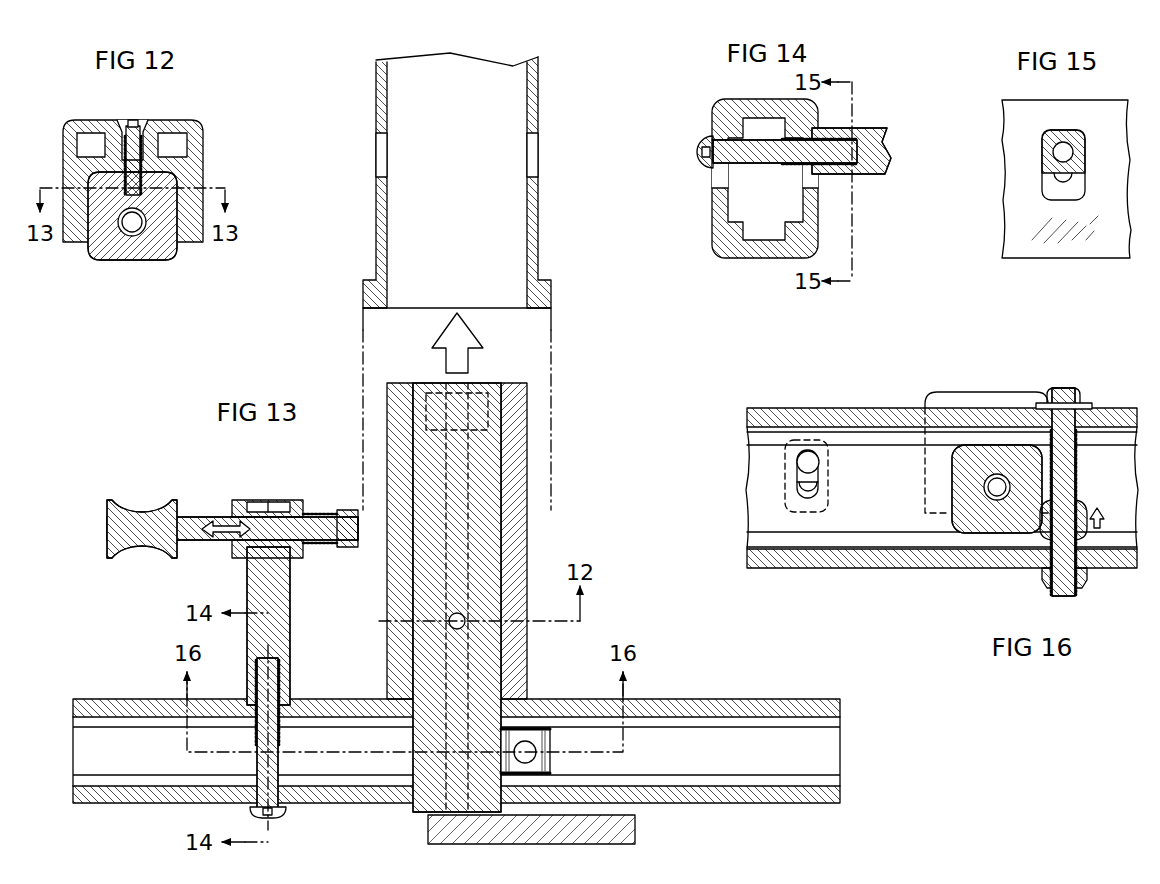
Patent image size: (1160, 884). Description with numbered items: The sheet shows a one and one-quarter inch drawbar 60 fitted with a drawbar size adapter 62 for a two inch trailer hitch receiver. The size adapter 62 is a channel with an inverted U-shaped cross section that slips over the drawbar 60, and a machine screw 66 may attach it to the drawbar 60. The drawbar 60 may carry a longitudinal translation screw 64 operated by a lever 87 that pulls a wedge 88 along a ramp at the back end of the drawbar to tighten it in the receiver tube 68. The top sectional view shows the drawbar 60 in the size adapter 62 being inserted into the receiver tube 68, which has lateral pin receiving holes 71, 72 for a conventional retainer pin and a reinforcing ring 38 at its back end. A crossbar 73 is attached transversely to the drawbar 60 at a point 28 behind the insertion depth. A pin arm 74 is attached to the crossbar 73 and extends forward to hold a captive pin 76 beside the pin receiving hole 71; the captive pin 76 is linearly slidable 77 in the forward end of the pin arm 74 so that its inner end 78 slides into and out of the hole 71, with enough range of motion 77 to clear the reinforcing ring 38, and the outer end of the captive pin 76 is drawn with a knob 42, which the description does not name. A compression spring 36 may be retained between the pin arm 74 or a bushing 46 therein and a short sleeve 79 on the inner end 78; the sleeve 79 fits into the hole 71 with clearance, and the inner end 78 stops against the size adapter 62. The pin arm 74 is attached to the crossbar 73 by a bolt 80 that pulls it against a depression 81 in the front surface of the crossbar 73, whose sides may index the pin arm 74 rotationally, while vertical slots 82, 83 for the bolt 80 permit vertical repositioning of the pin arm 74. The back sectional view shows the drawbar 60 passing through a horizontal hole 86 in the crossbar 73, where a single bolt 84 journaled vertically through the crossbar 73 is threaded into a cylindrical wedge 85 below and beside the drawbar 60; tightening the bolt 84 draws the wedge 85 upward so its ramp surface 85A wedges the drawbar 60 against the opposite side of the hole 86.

In FIG. 13, the point 28 is at (398, 690).
In FIG. 13, the compression spring 36 is at (304, 507).
In FIG. 13, the reinforcing ring 38 is at (546, 282).
In FIG. 13, the knob 42 is at (146, 508).
In FIG. 13, the bushing 46 is at (296, 553).
In FIG. 12, the drawbar 60 is at (143, 256).
In FIG. 13, the drawbar 60 is at (484, 483).
In FIG. 16, the drawbar 60 is at (965, 495).
In FIG. 12, the drawbar size adapter 62 is at (197, 172).
In FIG. 13, the drawbar size adapter 62 is at (513, 519).
In FIG. 16, the drawbar size adapter 62 is at (1006, 391).
In FIG. 12, the longitudinal translation screw 64 is at (127, 230).
In FIG. 13, the longitudinal translation screw 64 is at (470, 454).
In FIG. 12, the machine screw 66 is at (130, 119).
In FIG. 13, the machine screw 66 is at (462, 628).
In FIG. 13, the receiver tube 68 is at (441, 225).
In FIG. 13, the pin receiving hole 71 is at (383, 130).
In FIG. 13, the pin receiving hole 72 is at (529, 130).
In FIG. 13, the crossbar 73 is at (146, 764).
In FIG. 14, the crossbar 73 is at (712, 216).
In FIG. 15, the crossbar 73 is at (1003, 142).
In FIG. 16, the crossbar 73 is at (829, 420).
In FIG. 13, the pin arm 74 is at (284, 621).
In FIG. 14, the pin arm 74 is at (870, 132).
In FIG. 15, the pin arm 74 is at (1053, 134).
In FIG. 16, the pin arm 74 is at (824, 500).
In FIG. 13, the captive pin 76 is at (190, 514).
In FIG. 13, the linear sliding motion 77 is at (213, 536).
In FIG. 13, the inner end of captive pin 78 is at (346, 518).
In FIG. 13, the short sleeve 79 is at (346, 547).
In FIG. 13, the bolt 80 is at (286, 814).
In FIG. 14, the bolt 80 is at (748, 163).
In FIG. 15, the bolt 80 is at (1064, 145).
In FIG. 16, the bolt 80 is at (815, 464).
In FIG. 14, the depression 81 is at (815, 182).
In FIG. 15, the depression 81 is at (1042, 183).
In FIG. 16, the depression 81 is at (786, 478).
In FIG. 14, the vertical slot 82 is at (712, 178).
In FIG. 14, the vertical slot 83 is at (803, 172).
In FIG. 15, the vertical slot 83 is at (1070, 182).
In FIG. 16, the vertical slot 83 is at (797, 496).
In FIG. 16, the bolt 84 is at (1081, 399).
In FIG. 13, the wedge 85 is at (548, 742).
In FIG. 16, the wedge 85 is at (1080, 516).
In FIG. 16, the ramp surface 85A is at (1043, 504).
In FIG. 16, the horizontal hole 86 is at (957, 458).
In FIG. 13, the lever 87 is at (636, 832).
In FIG. 13, the wedge 88 is at (481, 392).